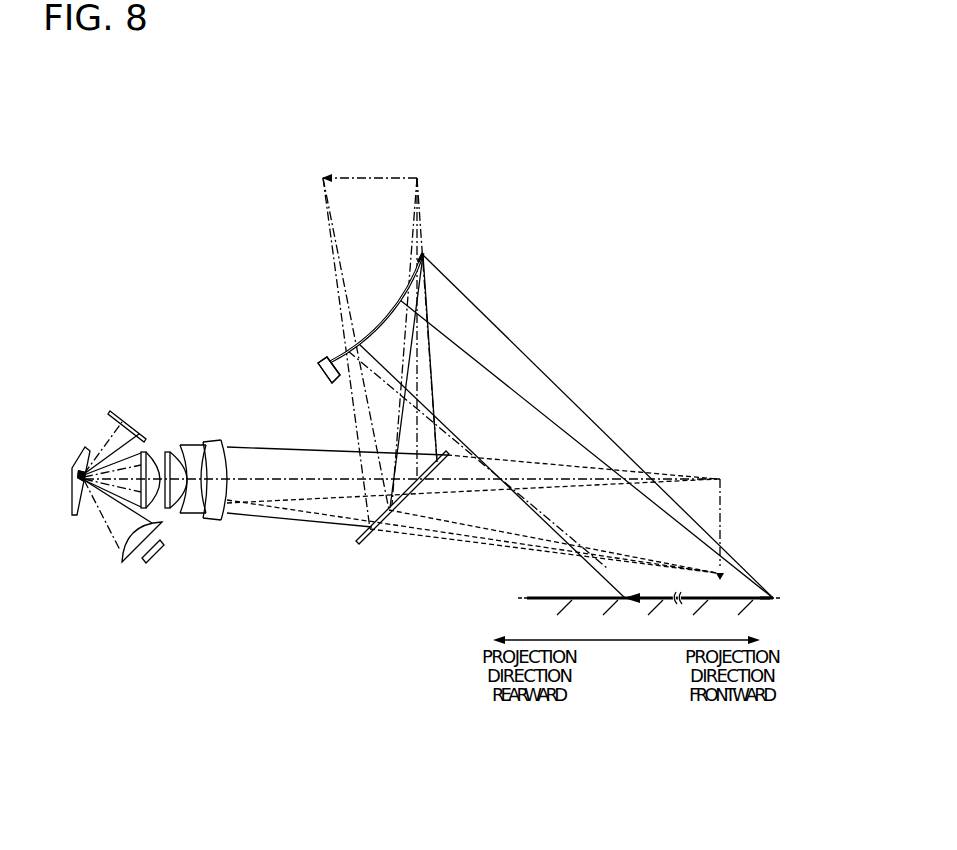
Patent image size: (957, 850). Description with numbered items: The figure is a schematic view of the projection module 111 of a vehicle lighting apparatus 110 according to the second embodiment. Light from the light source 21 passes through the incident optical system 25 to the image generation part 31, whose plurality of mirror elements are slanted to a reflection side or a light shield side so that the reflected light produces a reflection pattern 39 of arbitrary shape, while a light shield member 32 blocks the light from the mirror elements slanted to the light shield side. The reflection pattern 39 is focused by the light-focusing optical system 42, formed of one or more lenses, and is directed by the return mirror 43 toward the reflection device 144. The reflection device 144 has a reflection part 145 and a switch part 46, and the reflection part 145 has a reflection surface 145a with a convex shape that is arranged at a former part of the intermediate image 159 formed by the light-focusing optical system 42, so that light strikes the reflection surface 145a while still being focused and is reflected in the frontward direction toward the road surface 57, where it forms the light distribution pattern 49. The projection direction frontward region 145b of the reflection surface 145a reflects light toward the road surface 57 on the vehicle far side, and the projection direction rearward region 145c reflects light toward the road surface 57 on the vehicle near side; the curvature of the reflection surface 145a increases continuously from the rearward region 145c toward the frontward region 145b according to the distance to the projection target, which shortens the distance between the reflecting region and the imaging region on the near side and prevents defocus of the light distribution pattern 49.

The light source 21 is at (160, 554).
The incident optical system 25 is at (121, 553).
The image generation part 31 is at (78, 449).
The light shield member 32 is at (128, 410).
The reflection pattern 39 is at (83, 468).
The light-focusing optical system 42 is at (191, 432).
The return mirror 43 is at (375, 538).
The switch part 46 is at (320, 372).
The light distribution pattern 49 is at (738, 597).
The road surface 57 is at (538, 597).
The vehicle lighting apparatus 110 is at (600, 145).
The projection module 111 is at (600, 222).
The reflection device 144 is at (448, 270).
The reflection part 145 is at (337, 347).
The reflection surface 145a is at (388, 342).
The projection direction frontward region 145b is at (425, 255).
The projection direction rearward region 145c is at (343, 381).
The intermediate image 159 is at (378, 177).